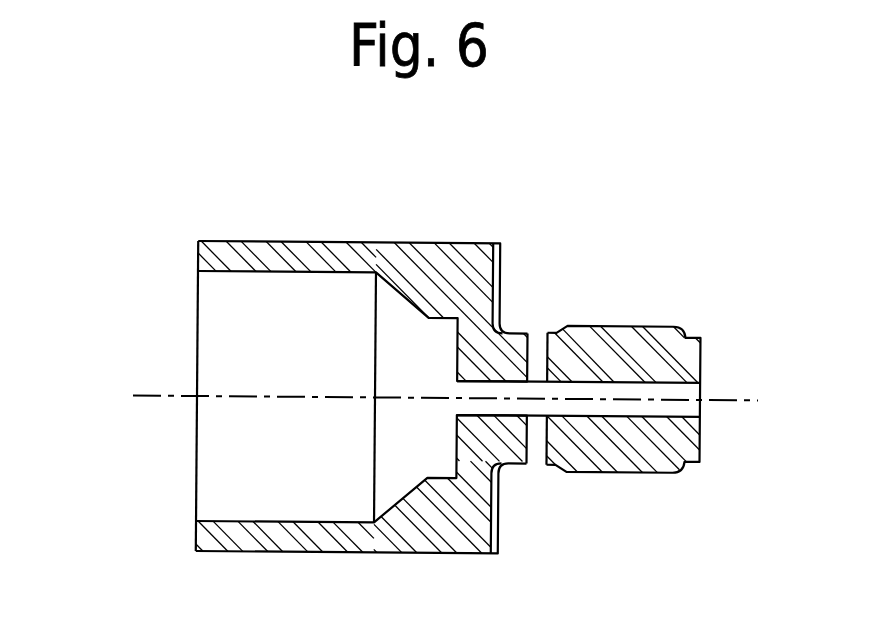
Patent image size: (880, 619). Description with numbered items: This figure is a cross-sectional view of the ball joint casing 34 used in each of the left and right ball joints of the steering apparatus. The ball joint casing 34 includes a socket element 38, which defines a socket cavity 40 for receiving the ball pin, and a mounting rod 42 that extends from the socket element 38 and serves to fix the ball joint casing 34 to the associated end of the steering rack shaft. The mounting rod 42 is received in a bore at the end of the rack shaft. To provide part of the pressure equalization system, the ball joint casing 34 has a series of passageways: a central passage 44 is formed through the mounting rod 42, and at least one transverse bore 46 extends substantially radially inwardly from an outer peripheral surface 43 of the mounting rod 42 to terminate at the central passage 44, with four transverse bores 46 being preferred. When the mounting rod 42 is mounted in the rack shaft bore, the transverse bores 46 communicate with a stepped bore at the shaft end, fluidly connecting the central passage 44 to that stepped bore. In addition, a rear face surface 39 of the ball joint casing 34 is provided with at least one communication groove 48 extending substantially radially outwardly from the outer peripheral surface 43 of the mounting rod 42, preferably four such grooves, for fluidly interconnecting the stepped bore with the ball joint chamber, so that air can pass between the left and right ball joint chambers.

The ball joint casing 34 is at (418, 219).
The socket element 38 is at (295, 240).
The rear face surface 39 is at (500, 526).
The socket cavity 40 is at (208, 467).
The mounting rod 42 is at (638, 474).
The outer peripheral surface 43 is at (521, 334).
The central passage 44 is at (686, 394).
The transverse bore 46 is at (548, 333).
The communication groove 48 is at (500, 274).